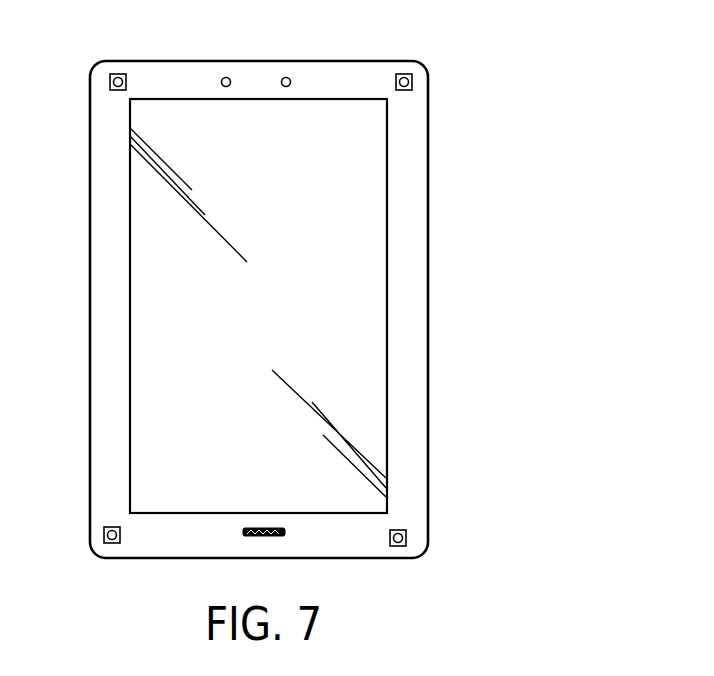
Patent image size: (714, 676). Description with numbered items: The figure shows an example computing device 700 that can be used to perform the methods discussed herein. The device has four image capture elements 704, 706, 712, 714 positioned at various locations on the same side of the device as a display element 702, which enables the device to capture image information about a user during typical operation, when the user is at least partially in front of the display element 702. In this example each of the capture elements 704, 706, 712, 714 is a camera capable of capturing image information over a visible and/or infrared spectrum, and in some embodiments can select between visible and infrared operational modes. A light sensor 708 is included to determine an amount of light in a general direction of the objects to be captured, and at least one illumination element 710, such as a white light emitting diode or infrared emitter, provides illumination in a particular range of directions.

The computing device 700 is at (575, 115).
The display element 702 is at (130, 110).
The image capture element 704 is at (118, 74).
The image capture element 706 is at (404, 74).
The light sensor 708 is at (287, 77).
The illumination element 710 is at (226, 77).
The image capture element 712 is at (112, 543).
The image capture element 714 is at (398, 546).